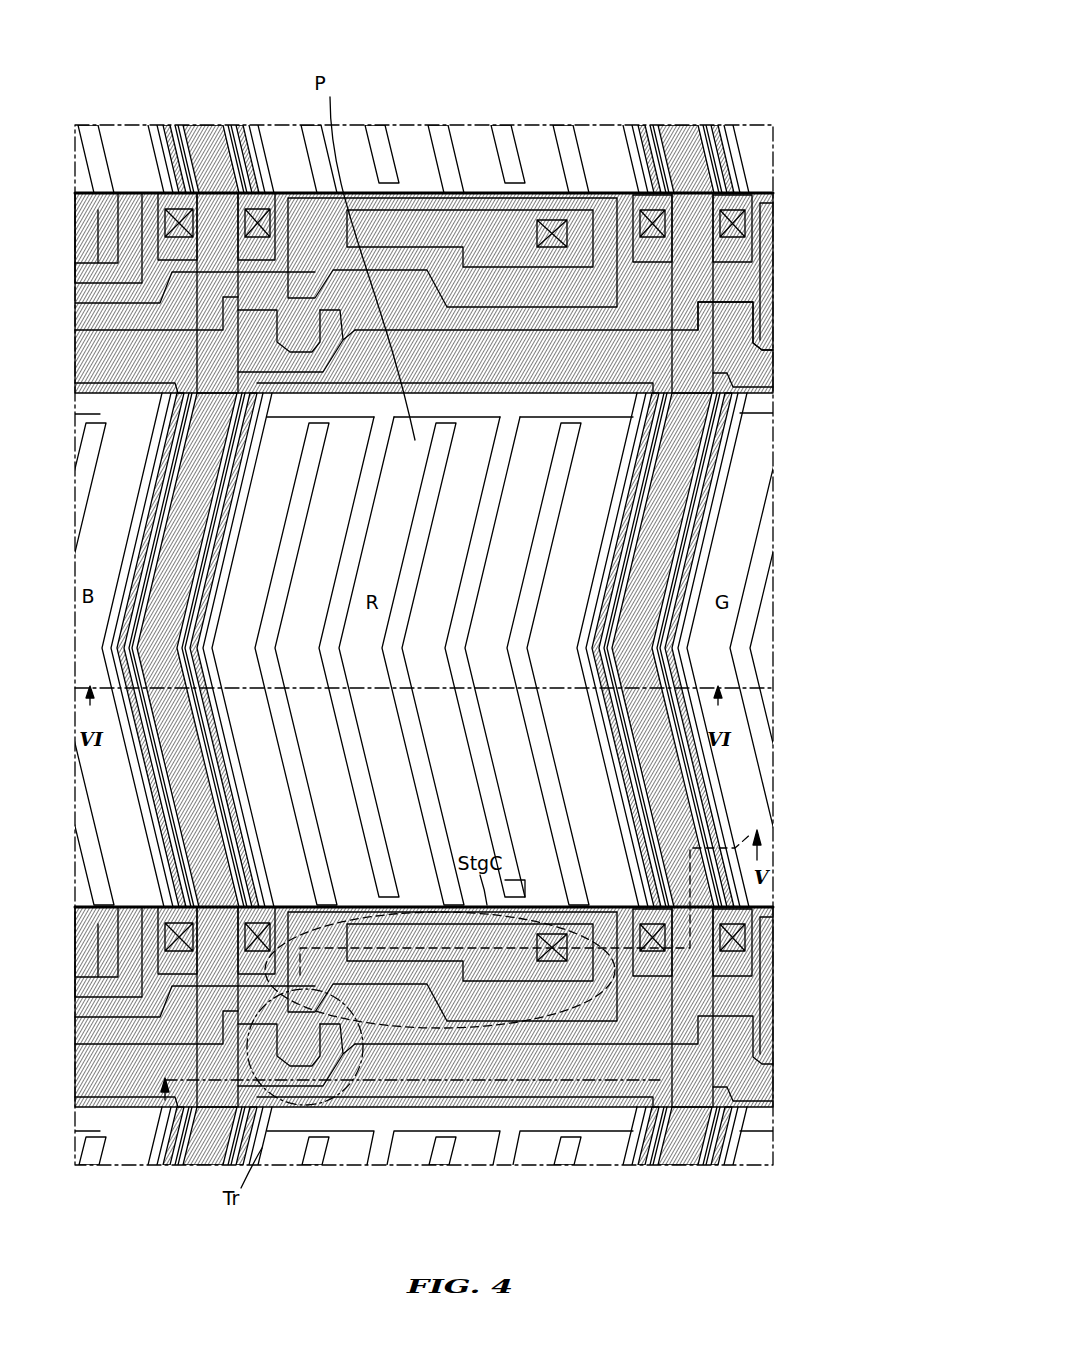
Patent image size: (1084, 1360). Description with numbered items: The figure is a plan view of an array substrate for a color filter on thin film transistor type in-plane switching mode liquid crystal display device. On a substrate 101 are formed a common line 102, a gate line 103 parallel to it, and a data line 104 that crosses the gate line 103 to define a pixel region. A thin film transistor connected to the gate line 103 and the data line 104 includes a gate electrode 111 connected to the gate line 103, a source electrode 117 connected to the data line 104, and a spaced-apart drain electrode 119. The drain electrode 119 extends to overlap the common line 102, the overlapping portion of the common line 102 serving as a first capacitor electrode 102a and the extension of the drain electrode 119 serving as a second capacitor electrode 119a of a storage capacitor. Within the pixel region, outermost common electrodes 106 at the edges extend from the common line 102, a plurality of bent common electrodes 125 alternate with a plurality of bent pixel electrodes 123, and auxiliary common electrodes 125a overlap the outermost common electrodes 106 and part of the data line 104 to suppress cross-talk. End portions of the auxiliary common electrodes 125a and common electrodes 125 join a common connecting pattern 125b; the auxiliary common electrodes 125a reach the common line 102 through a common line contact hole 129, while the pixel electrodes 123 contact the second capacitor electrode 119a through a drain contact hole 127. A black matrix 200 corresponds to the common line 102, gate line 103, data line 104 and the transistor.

The substrate 101 is at (668, 90).
The common line 102 is at (603, 1067).
The first capacitor electrode 102a is at (447, 937).
The gate line 103 is at (473, 1087).
The data line 104 is at (205, 505).
The outermost common electrode 106 is at (143, 512).
The gate electrode 111 is at (335, 1066).
The source electrode 117 is at (372, 1065).
The drain electrode 119 is at (300, 1065).
The second capacitor electrode 119a is at (530, 1060).
The pixel electrode 123 is at (422, 495).
The common electrode 125 is at (475, 590).
The auxiliary common electrode 125a is at (140, 446).
The common connecting pattern 125b is at (498, 988).
The drain contact hole 127 is at (549, 918).
The common line contact hole 129 is at (260, 915).
The black matrix 200 is at (765, 350).